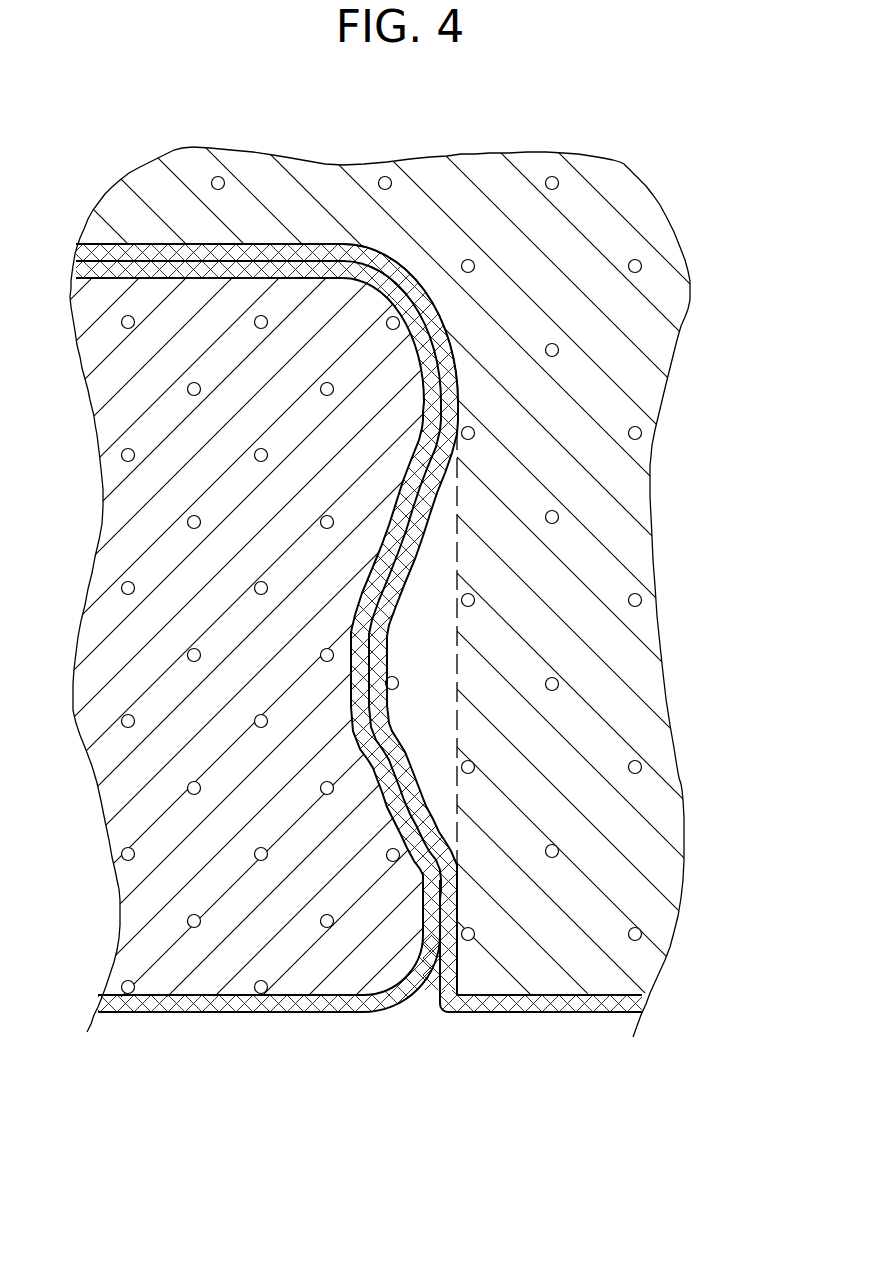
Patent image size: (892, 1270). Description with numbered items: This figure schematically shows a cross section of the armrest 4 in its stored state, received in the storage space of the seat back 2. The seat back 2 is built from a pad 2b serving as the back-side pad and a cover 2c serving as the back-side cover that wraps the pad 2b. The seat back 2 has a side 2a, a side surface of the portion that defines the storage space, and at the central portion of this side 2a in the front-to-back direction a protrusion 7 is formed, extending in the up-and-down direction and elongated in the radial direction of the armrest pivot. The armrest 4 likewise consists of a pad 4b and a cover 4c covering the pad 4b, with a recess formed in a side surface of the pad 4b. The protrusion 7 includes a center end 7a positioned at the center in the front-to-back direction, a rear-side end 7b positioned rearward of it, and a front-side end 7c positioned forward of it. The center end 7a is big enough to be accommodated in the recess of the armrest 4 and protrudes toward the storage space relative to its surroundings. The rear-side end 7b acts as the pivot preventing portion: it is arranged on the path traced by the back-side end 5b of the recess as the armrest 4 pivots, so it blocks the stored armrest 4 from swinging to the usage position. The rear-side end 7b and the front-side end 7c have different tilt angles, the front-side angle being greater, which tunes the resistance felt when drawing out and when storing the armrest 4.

The seat back 2 is at (547, 1048).
The side 2a is at (438, 985).
The pad 2b is at (655, 651).
The cover 2c is at (602, 1014).
The armrest 4 is at (115, 1064).
The pad 4b is at (117, 516).
The cover 4c is at (410, 988).
The back-side end 5b is at (430, 488).
The protrusion 7 is at (359, 696).
The center end 7a is at (354, 693).
The rear-side end 7b is at (260, 713).
The front-side end 7c is at (359, 671).